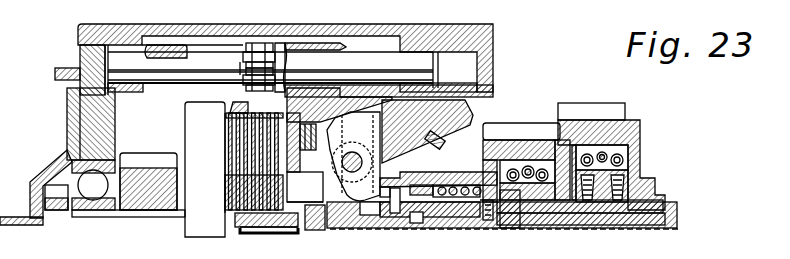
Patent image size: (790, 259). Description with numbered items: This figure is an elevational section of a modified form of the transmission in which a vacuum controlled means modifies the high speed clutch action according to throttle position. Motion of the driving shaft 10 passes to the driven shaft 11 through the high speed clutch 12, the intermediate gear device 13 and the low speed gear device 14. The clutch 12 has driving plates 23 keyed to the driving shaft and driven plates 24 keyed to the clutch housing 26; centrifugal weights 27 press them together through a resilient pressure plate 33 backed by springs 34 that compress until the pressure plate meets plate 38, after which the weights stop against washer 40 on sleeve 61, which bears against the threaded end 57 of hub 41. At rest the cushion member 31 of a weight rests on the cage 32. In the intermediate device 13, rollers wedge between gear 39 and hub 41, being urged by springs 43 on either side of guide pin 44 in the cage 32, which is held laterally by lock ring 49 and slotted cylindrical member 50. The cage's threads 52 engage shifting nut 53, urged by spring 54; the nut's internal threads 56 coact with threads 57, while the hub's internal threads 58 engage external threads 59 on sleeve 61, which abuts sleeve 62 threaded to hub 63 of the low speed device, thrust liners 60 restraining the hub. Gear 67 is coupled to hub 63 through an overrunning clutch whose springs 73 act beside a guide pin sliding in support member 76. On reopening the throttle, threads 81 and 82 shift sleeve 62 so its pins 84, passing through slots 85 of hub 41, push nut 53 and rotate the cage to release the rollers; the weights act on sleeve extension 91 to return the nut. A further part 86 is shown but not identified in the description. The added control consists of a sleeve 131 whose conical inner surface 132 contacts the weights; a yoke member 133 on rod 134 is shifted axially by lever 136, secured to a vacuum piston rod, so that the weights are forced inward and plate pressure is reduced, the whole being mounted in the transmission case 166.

The driving shaft 10 is at (44, 219).
The driven shaft 11 is at (299, 236).
The high speed clutch 12 is at (210, 156).
The second or intermediate gear device 13 is at (547, 140).
The first or low speed gear device 14 is at (641, 134).
The driving plates 23 is at (287, 190).
The driven plates 24 is at (287, 178).
The clutch housing 26 is at (340, 229).
The centrifugal weights 27 is at (463, 109).
The cushion member 31 is at (441, 143).
The cage 32 is at (475, 185).
The resilient pressure plate 33 is at (314, 129).
The springs 34 is at (316, 141).
The plate 38 is at (288, 110).
The gear 39 is at (517, 123).
The washer 40 is at (387, 223).
The hub 41 is at (567, 223).
The springs 43 is at (512, 146).
The guide pin 44 is at (527, 171).
The lock ring 49 is at (485, 165).
The slotted cylindrical member 50 is at (353, 156).
The internal threads 52 is at (438, 187).
The shifting nut 53 is at (452, 186).
The spring 54 is at (462, 187).
The internal threads 56 is at (445, 223).
The external threads 57 is at (420, 223).
The internal threads 58 is at (478, 223).
The external threads 59 is at (462, 223).
The thrust liners 60 is at (580, 223).
The sleeve 61 is at (410, 223).
The sleeve 62 is at (618, 223).
The hub 63 is at (665, 206).
The gear 67 is at (626, 110).
The springs 73 is at (630, 156).
The support member 76 is at (645, 170).
The threads 81 is at (585, 223).
The threads 82 is at (668, 220).
The pins 84 is at (490, 221).
The slots 85 is at (520, 223).
The ball 86 is at (435, 177).
The sleeve extension 91 is at (405, 185).
The sleeve 131 is at (344, 116).
The conical inner surface 132 is at (341, 123).
The yoke member 133 is at (316, 43).
The rod 134 is at (388, 66).
The lever 136 is at (165, 45).
The transmission case 166 is at (85, 140).